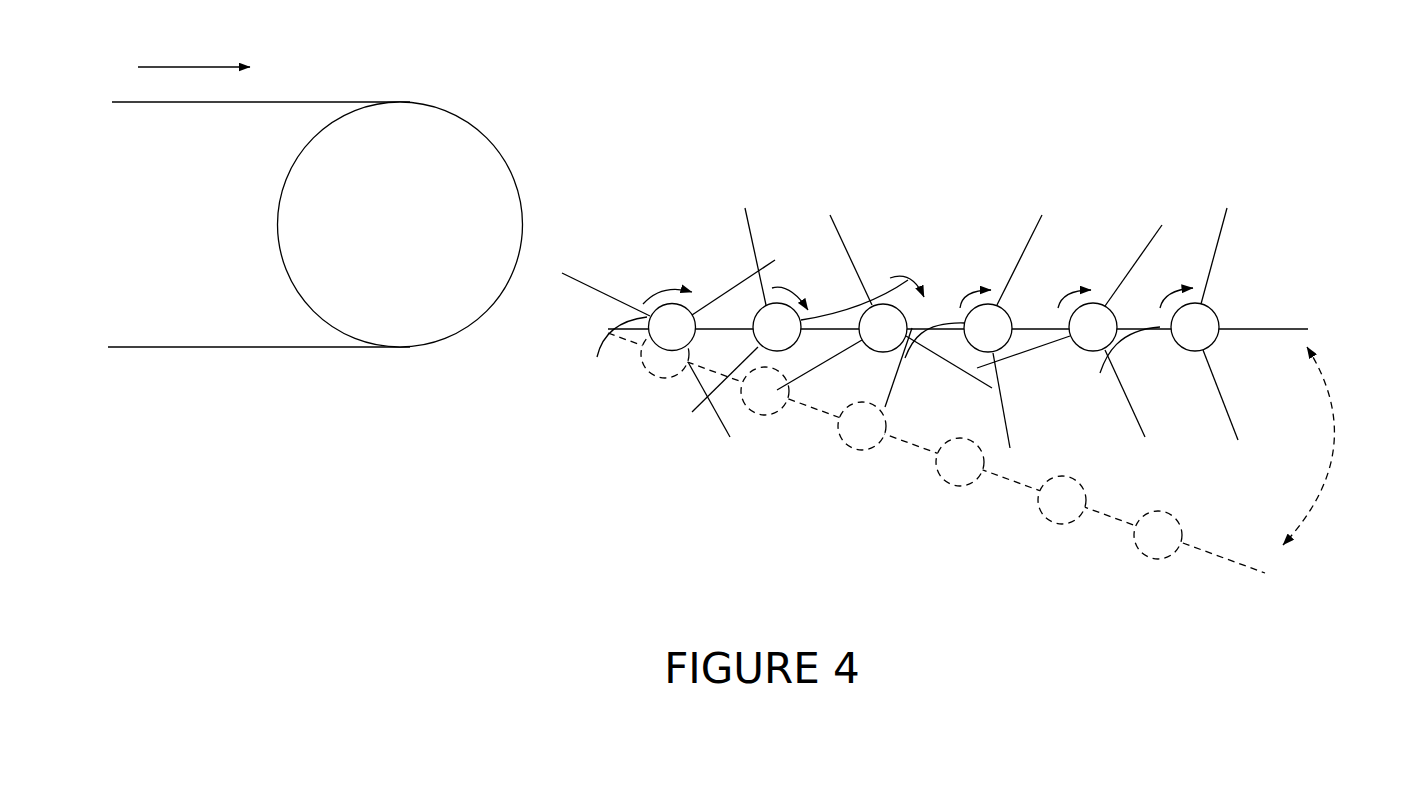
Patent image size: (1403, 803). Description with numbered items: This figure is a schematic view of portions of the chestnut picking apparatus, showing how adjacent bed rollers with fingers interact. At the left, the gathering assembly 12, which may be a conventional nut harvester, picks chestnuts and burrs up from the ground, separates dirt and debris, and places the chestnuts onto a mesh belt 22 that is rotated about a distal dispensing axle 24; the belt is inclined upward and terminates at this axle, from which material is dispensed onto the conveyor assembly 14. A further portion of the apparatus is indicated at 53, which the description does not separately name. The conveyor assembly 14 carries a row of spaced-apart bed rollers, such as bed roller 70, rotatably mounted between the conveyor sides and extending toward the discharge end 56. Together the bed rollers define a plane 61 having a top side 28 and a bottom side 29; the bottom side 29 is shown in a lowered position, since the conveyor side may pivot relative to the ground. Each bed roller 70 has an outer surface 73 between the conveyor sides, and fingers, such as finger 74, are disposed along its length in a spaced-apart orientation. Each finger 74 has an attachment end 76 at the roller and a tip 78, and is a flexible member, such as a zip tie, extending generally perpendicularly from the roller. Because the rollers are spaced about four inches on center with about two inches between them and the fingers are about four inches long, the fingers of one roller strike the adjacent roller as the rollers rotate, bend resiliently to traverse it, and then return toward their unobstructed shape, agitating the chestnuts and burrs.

The gathering assembly 12 is at (266, 374).
The conveyor assembly 14 is at (1084, 197).
The mesh belt 22 is at (176, 346).
The axle 24 is at (483, 133).
The top side 28 is at (943, 270).
The bottom side 29 is at (1052, 545).
The web path 53 is at (543, 185).
The discharge end 56 is at (1319, 333).
The plane 61 is at (1258, 321).
The bed roller 70 is at (657, 354).
The outer surface 73 is at (673, 352).
The finger 74 is at (595, 286).
The attachment end 76 is at (602, 345).
The tip 78 is at (562, 273).